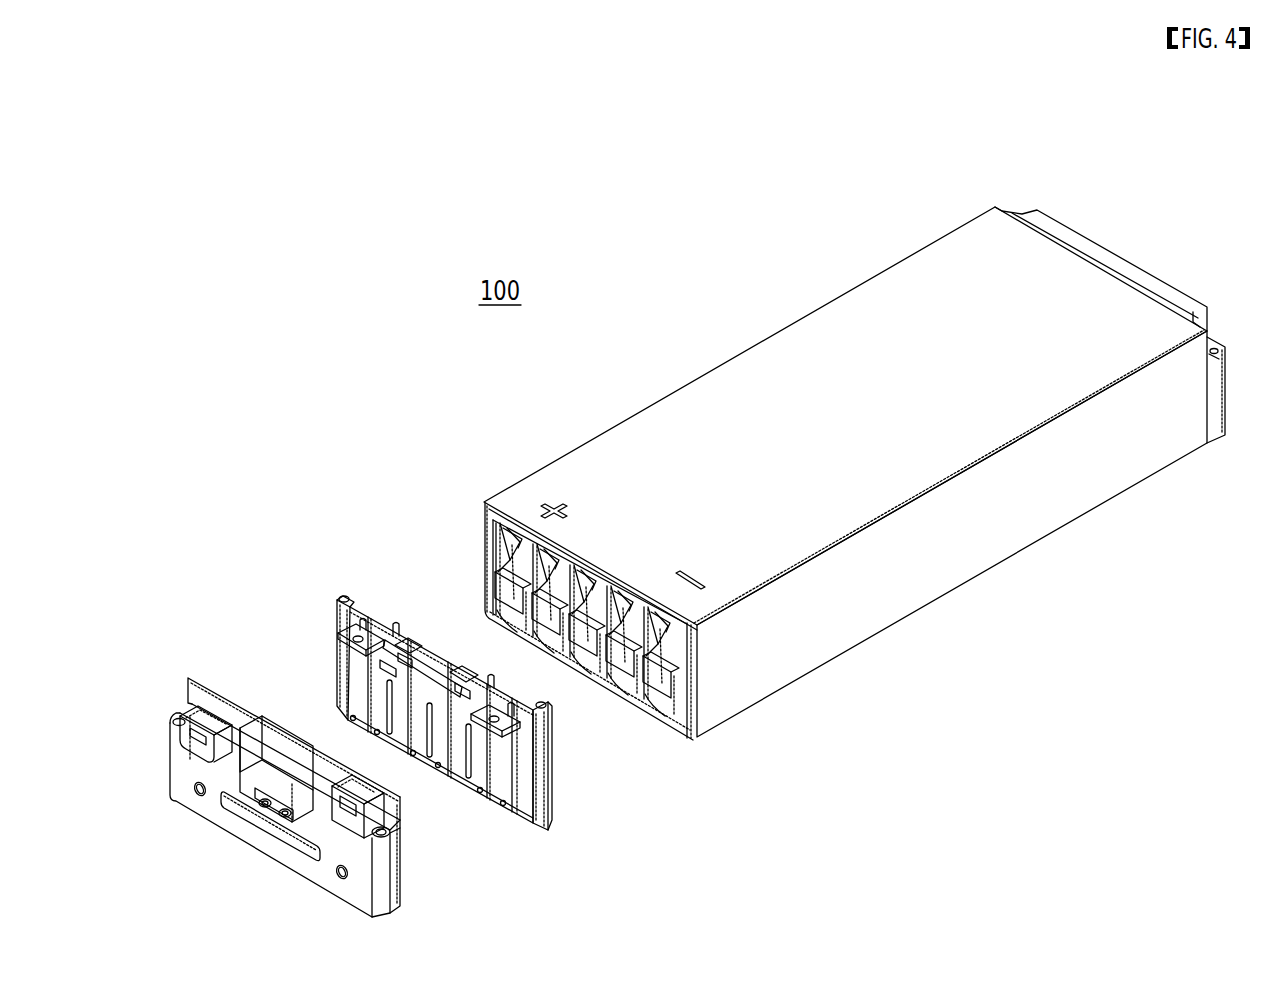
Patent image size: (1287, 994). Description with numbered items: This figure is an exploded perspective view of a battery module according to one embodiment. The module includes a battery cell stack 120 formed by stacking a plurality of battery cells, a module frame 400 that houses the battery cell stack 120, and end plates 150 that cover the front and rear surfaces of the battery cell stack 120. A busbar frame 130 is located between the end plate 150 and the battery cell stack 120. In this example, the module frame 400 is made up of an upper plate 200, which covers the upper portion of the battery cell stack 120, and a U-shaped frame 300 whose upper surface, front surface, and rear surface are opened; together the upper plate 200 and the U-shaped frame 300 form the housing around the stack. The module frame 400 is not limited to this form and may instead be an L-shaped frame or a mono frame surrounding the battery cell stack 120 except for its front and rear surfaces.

The battery cell stack 120 is at (510, 560).
The busbar frame 130 is at (340, 620).
The end plates 150 is at (186, 698).
The upper plate 200 is at (943, 445).
The U-shaped frame 300 is at (1080, 612).
The module frame 400 is at (845, 472).